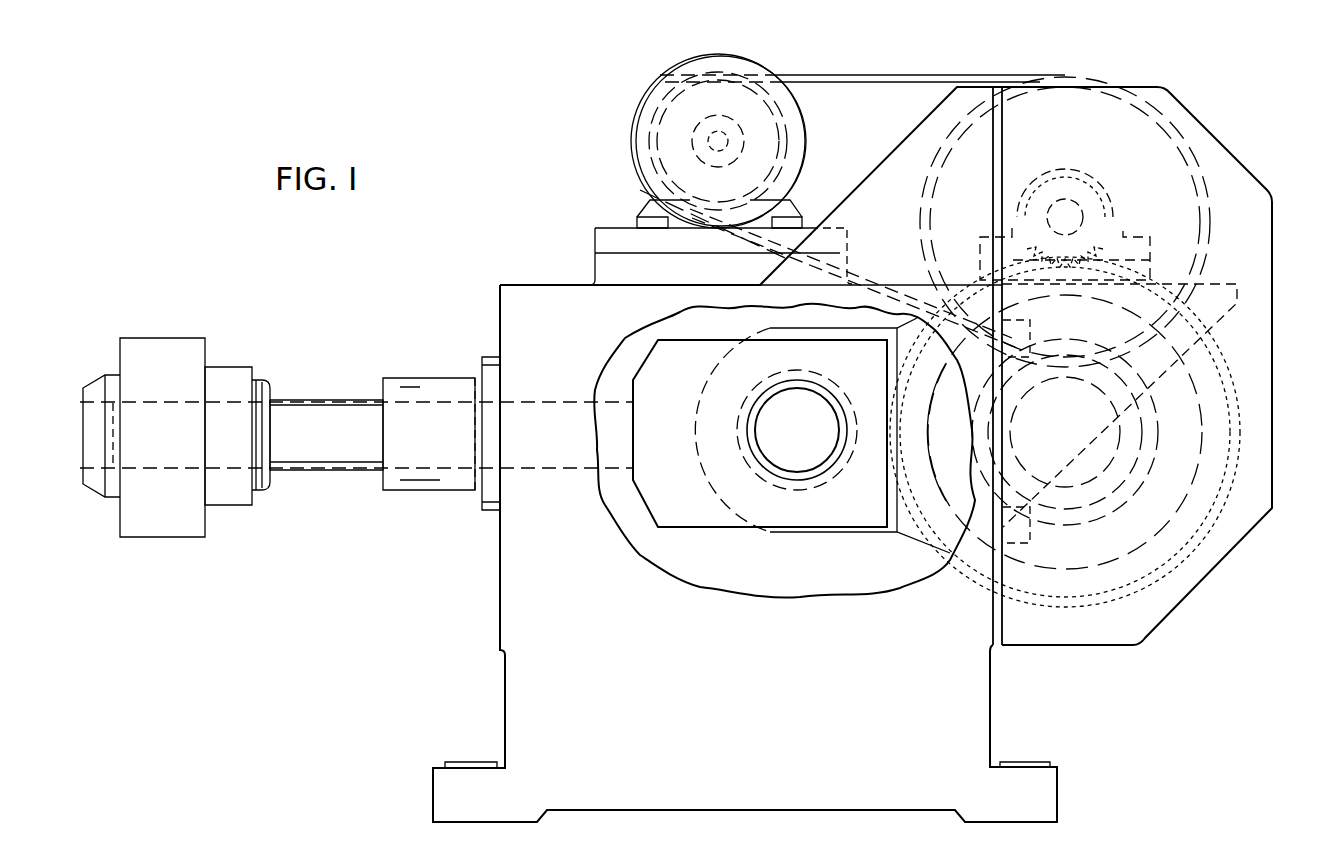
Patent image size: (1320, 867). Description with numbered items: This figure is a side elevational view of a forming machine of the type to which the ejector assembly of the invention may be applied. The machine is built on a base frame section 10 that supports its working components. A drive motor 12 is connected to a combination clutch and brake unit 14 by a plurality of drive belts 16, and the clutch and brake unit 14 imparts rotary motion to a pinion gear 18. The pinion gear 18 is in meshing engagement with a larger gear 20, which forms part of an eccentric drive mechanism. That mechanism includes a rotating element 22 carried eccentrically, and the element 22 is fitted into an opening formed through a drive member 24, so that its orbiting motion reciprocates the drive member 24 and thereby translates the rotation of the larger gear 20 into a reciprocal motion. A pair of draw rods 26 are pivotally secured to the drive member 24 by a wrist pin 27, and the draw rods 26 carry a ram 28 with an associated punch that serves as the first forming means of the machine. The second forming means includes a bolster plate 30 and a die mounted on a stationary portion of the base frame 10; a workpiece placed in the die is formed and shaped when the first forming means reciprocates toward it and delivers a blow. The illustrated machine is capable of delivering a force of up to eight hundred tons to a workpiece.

The base frame section 10 is at (422, 627).
The drive motor 12 is at (646, 80).
The combination clutch and brake unit 14 is at (1098, 73).
The drive belts 16 is at (857, 70).
The pinion gear 18 is at (1148, 250).
The larger gear 20 is at (1235, 372).
The rotating element 22 is at (952, 495).
The drive member 24 is at (822, 533).
The draw rods 26 is at (340, 403).
The wrist pin 27 is at (784, 443).
The ram 28 is at (233, 377).
The bolster plate 30 is at (478, 372).